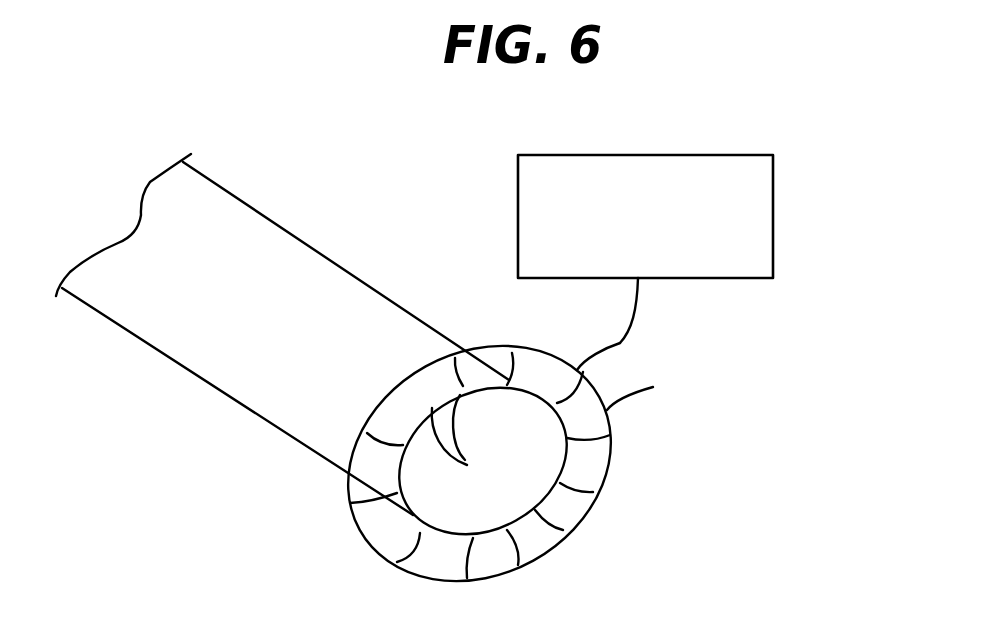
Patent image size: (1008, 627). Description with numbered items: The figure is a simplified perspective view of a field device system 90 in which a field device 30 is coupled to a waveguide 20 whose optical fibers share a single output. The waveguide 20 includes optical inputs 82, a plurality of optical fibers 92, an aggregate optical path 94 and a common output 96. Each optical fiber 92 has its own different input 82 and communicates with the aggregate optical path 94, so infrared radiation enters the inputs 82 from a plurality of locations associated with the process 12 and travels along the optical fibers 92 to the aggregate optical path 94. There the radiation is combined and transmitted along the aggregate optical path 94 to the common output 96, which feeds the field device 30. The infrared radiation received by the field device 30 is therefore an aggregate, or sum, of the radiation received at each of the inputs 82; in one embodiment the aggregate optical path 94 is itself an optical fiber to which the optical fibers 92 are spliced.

The process 12 is at (228, 350).
The waveguide 20 is at (568, 338).
The field device 30 is at (680, 156).
The optical inputs 82 is at (410, 447).
The field device system 90 is at (663, 512).
The optical fibers 92 is at (462, 386).
The aggregate optical path 94 is at (620, 343).
The common output 96 is at (638, 280).